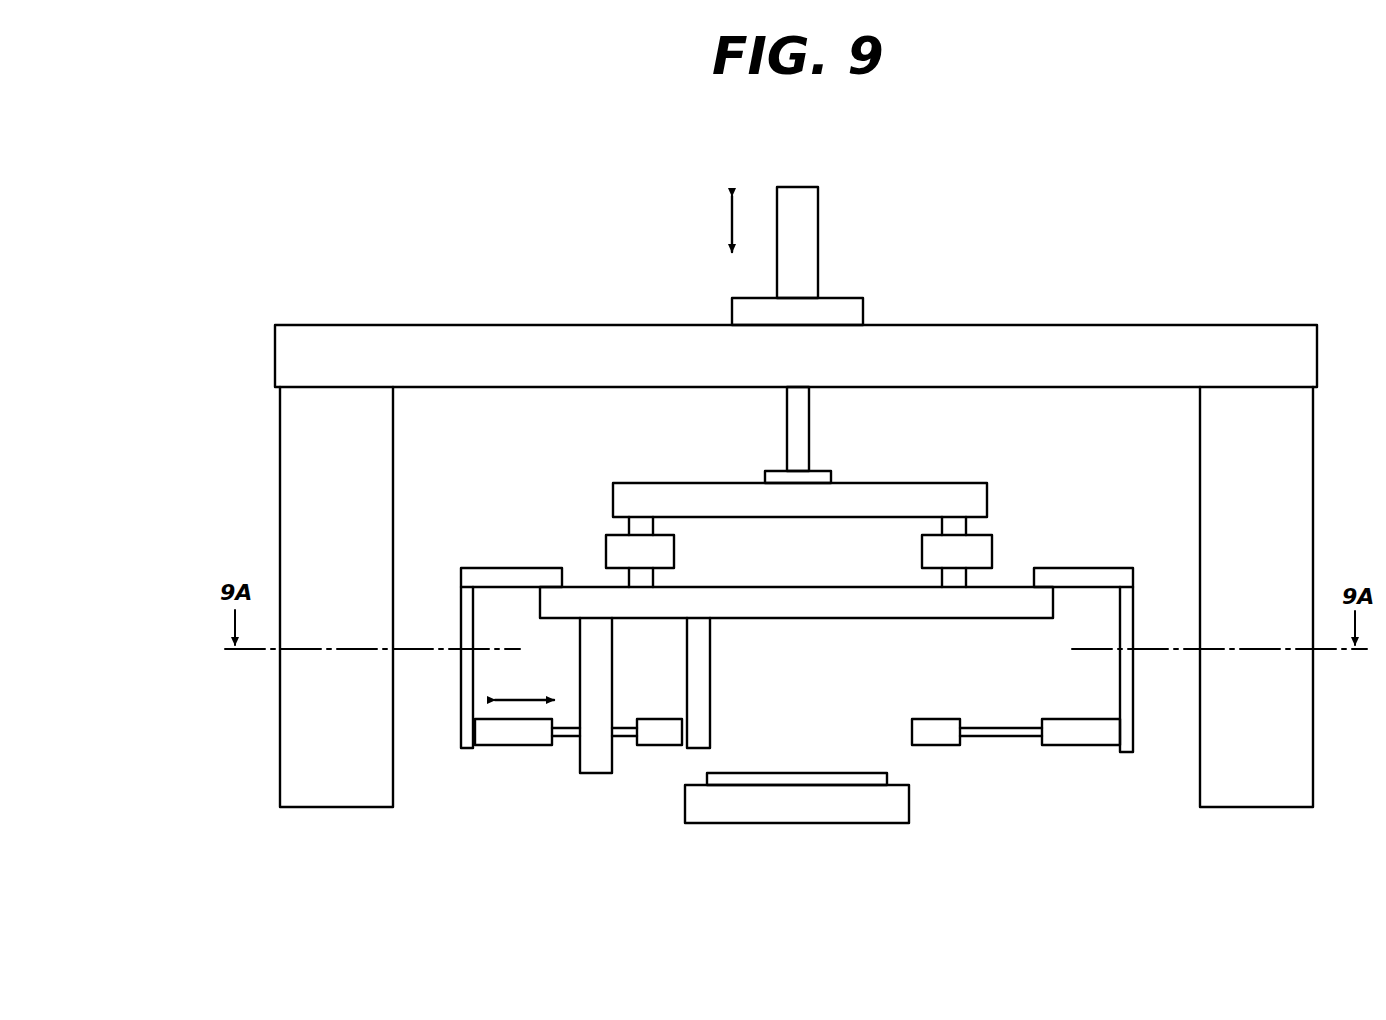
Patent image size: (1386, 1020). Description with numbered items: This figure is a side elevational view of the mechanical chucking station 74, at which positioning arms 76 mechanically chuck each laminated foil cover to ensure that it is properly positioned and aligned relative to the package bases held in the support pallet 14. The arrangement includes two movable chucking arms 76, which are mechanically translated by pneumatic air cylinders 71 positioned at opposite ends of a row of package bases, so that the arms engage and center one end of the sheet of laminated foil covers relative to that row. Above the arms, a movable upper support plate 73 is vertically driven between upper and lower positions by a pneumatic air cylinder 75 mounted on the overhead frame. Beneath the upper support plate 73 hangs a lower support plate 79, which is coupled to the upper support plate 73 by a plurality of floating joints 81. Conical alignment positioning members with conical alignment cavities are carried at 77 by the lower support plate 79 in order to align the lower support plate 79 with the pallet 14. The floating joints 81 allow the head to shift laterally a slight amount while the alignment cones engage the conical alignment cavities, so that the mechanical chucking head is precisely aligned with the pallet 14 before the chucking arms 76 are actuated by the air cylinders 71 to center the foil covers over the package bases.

The mechanical chucking station 74 is at (584, 224).
The pneumatic air cylinder 75 is at (818, 259).
The movable upper support plate 73 is at (716, 482).
The floating joints 81 is at (674, 556).
The lower support plate 79 is at (805, 620).
The mounting location of conical alignment positioning members 77 is at (710, 677).
The positioning arms 76 is at (660, 718).
The pneumatic air cylinders 71 is at (507, 746).
The pallet 14 is at (774, 823).